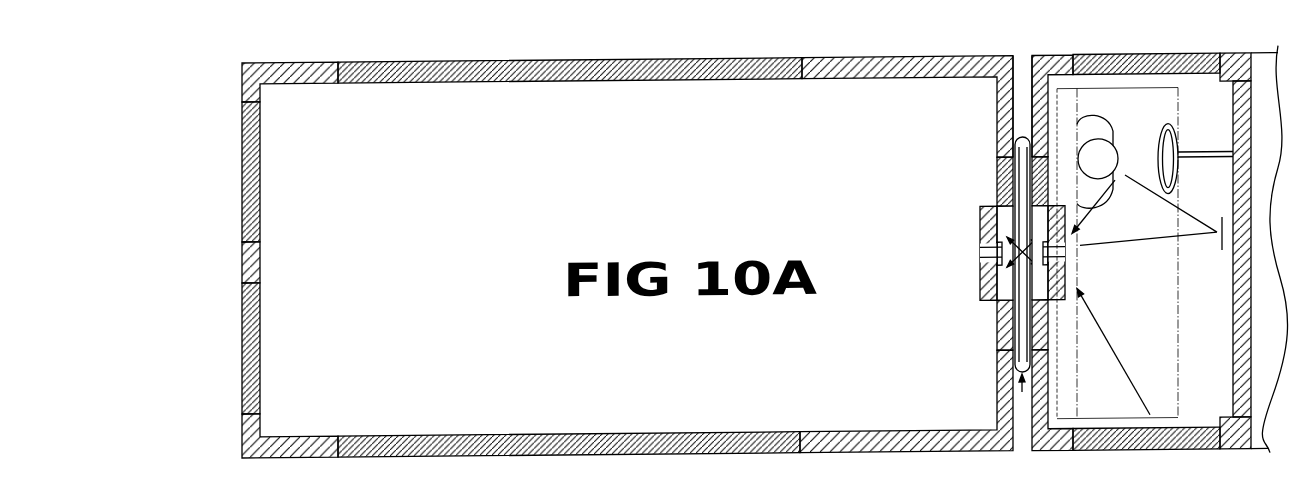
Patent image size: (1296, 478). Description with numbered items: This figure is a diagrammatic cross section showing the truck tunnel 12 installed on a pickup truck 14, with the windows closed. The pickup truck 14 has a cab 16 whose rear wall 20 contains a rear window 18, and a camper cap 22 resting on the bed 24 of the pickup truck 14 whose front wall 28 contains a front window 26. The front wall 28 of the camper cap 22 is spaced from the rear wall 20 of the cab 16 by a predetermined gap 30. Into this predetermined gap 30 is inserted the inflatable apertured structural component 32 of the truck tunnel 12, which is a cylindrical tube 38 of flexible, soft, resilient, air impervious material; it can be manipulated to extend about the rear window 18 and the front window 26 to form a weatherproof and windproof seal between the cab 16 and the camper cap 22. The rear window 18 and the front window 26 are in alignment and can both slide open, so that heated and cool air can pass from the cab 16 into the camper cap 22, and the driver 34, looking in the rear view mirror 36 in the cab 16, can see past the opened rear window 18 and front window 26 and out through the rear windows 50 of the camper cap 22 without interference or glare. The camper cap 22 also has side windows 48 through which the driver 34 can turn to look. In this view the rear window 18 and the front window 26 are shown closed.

The truck tunnel 12 is at (1023, 113).
The pickup truck 14 is at (1263, 43).
The cab 16 is at (1055, 44).
The rear window 18 is at (1060, 275).
The rear wall 20 is at (1040, 398).
The camper cap 22 is at (233, 428).
The bed 24 is at (272, 150).
The front window 26 is at (990, 222).
The front wall 28 is at (1003, 410).
The predetermined gap 30 is at (1027, 62).
The inflatable apertured structural component 32 is at (1022, 390).
The driver 34 is at (1082, 126).
The rear view mirror 36 is at (1222, 246).
The cylindrical tube 38 is at (1022, 180).
The side windows 48 is at (720, 70).
The rear windows 50 is at (250, 202).